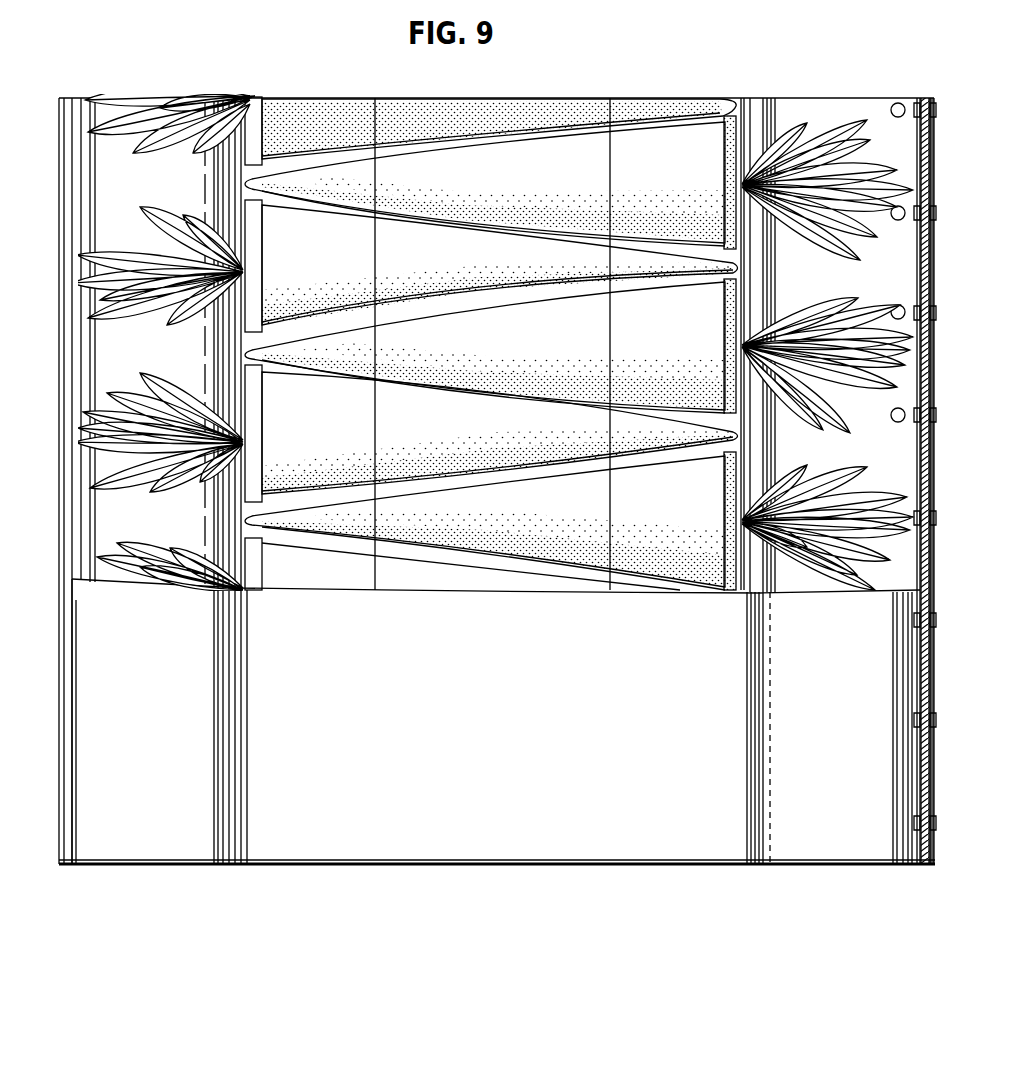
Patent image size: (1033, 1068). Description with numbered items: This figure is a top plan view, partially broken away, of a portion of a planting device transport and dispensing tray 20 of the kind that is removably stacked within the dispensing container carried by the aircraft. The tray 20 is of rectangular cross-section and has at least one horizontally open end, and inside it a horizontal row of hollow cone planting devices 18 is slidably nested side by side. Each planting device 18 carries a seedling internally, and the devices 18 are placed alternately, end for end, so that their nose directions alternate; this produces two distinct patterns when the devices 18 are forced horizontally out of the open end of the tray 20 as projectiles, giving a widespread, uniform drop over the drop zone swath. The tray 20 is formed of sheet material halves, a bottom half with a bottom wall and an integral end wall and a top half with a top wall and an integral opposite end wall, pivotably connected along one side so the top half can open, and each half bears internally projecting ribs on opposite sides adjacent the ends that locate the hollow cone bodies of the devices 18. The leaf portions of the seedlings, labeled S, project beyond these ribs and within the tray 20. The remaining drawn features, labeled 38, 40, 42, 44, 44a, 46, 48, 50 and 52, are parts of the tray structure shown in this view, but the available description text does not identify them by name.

The planting devices 18 is at (437, 428).
The planting device transport and dispensing tray 20 is at (940, 268).
The side panel 38 is at (110, 184).
The frame post 40 is at (59, 277).
The base 42 is at (607, 828).
The front panel 44 is at (525, 838).
The front panel edge 44a is at (73, 606).
The hinge strip 46 is at (923, 354).
The frame rail 48 is at (934, 395).
The mounting holes 50 is at (897, 312).
The vertical support rails 52 is at (228, 190).
The simulated foliage S is at (192, 571).